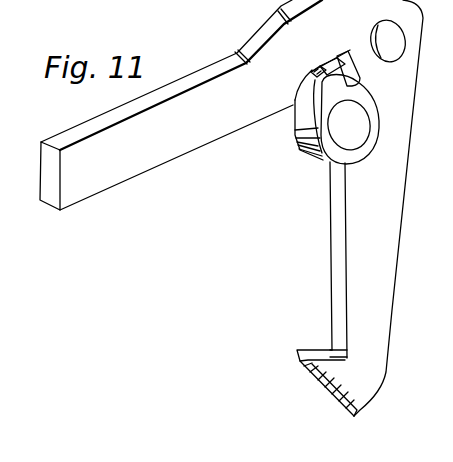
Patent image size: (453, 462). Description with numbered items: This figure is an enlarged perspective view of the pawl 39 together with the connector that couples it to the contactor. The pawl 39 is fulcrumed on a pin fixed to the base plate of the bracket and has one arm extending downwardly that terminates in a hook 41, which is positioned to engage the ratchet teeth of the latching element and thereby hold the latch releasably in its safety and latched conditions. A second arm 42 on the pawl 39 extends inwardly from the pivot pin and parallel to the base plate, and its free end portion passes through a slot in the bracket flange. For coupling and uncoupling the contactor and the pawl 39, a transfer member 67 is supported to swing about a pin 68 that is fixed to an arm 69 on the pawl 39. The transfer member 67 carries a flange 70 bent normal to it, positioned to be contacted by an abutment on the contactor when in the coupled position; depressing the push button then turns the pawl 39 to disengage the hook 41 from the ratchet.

The second arm 42 is at (142, 172).
The pawl 39 is at (327, 227).
The hook 41 is at (340, 386).
The pin 68 is at (358, 132).
The arm 69 is at (300, 140).
The transfer member 67 is at (311, 70).
The flange 70 is at (306, 84).